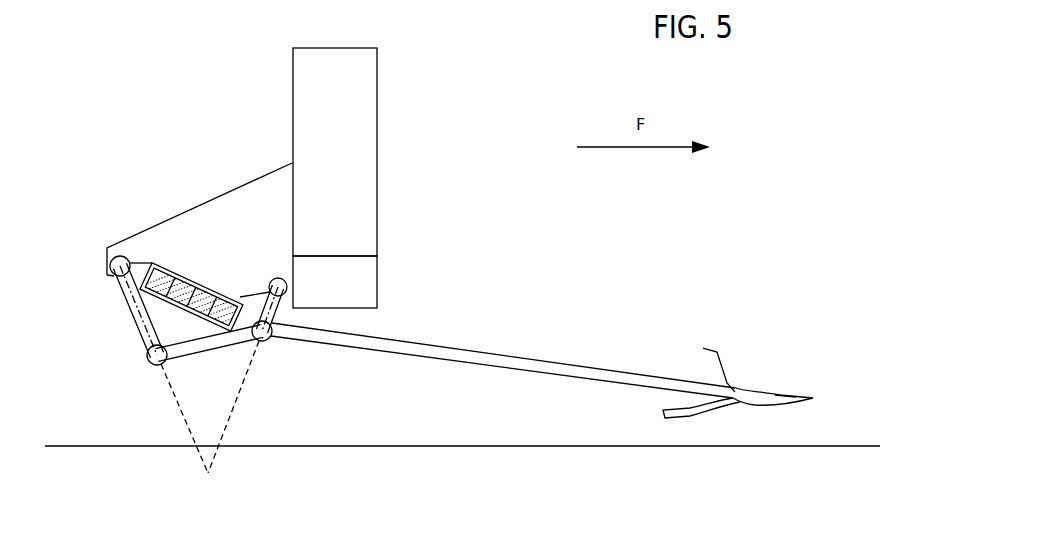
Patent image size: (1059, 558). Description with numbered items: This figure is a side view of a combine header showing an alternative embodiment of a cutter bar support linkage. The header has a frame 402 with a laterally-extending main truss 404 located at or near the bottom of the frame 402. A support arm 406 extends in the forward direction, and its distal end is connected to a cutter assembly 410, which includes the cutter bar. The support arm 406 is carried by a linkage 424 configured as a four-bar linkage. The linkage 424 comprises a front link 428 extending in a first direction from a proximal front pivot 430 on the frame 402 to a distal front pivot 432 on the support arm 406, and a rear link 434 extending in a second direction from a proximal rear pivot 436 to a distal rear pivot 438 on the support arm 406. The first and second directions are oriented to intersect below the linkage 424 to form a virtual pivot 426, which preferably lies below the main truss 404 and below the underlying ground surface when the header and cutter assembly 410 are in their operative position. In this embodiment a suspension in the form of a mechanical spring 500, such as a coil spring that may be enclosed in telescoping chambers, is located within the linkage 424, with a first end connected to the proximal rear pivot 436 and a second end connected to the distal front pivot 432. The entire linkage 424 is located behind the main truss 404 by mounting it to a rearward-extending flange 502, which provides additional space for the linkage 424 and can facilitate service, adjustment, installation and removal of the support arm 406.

The frame 402 is at (362, 120).
The main truss 404 is at (367, 290).
The support arm 406 is at (530, 362).
The cutter assembly 410 is at (765, 361).
The linkage 424 is at (126, 338).
The virtual pivot 426 is at (202, 477).
The front link 428 is at (288, 318).
The proximal front pivot 430 is at (284, 287).
The distal front pivot 432 is at (272, 340).
The rear link 434 is at (132, 312).
The proximal rear pivot 436 is at (110, 266).
The distal rear pivot 438 is at (147, 360).
The mechanical spring 500 is at (197, 270).
The rearward-extending flange 502 is at (273, 190).